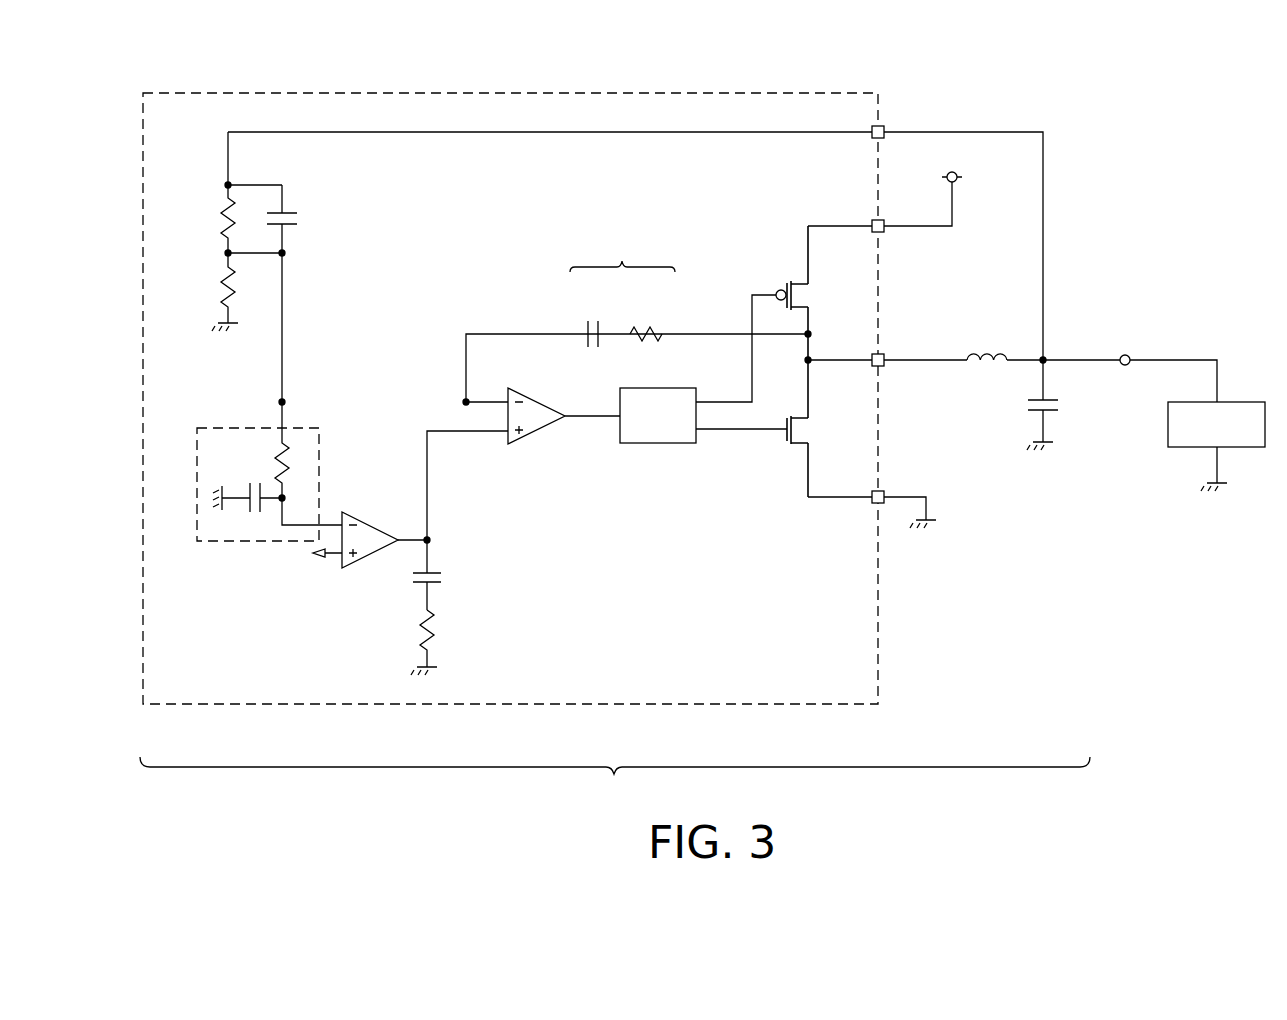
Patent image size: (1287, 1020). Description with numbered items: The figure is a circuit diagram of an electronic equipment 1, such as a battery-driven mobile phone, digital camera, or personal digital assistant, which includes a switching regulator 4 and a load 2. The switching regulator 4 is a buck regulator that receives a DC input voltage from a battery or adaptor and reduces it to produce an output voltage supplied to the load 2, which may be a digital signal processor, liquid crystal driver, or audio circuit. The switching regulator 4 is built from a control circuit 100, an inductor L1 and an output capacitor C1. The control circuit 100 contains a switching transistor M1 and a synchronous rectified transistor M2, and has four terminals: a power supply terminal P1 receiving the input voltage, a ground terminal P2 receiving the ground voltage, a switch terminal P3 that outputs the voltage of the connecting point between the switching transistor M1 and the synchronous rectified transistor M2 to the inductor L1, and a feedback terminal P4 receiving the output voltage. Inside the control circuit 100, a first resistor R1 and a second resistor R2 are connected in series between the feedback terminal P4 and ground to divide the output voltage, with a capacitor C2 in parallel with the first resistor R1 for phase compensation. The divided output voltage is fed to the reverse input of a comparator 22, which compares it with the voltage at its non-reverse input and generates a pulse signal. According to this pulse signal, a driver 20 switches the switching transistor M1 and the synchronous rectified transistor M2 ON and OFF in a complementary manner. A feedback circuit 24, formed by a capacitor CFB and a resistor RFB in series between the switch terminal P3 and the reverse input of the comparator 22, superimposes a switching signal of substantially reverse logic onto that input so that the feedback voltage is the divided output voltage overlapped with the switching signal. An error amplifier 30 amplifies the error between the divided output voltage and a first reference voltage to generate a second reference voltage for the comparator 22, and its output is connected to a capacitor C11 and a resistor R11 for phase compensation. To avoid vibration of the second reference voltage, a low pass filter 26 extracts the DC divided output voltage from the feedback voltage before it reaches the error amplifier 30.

The electronic equipment 1 is at (1203, 117).
The load 2 is at (1237, 401).
The switching regulator 4 is at (615, 778).
The control circuit 100 is at (530, 707).
The driver 20 is at (666, 446).
The comparator 22 is at (540, 432).
The feedback circuit 24 is at (622, 291).
The low pass filter 26 is at (213, 545).
The error amplifier 30 is at (362, 558).
The switching transistor M1 is at (810, 296).
The synchronous rectified transistor M2 is at (810, 430).
The power supply terminal P1 is at (885, 226).
The ground terminal P2 is at (887, 495).
The switch terminal P3 is at (886, 366).
The feedback terminal P4 is at (885, 126).
The first resistor R1 is at (220, 229).
The second resistor R2 is at (220, 296).
The capacitor C2 is at (302, 221).
The capacitor C11 is at (452, 582).
The resistor R11 is at (440, 630).
The capacitor CFB is at (593, 319).
The resistor RFB is at (648, 320).
The inductor L1 is at (989, 350).
The output capacitor C1 is at (1062, 406).